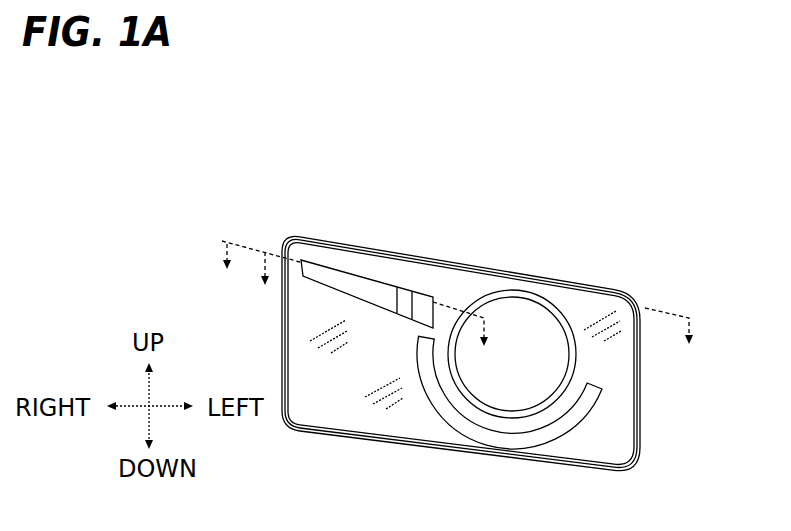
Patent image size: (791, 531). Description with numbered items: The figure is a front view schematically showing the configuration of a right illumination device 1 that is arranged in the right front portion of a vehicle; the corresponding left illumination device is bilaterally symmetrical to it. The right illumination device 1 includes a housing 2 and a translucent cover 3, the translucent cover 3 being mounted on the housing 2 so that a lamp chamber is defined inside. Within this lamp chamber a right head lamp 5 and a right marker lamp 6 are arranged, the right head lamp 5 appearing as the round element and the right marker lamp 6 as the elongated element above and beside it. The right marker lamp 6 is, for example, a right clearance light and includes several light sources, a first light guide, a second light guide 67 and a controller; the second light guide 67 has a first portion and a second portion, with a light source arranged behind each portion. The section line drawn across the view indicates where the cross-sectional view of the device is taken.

The right illumination device 1 is at (621, 272).
The housing 2 is at (641, 428).
The translucent cover 3 is at (349, 421).
The right head lamp 5 is at (541, 323).
The right marker lamp 6 is at (385, 270).
The second light guide 67 is at (354, 290).